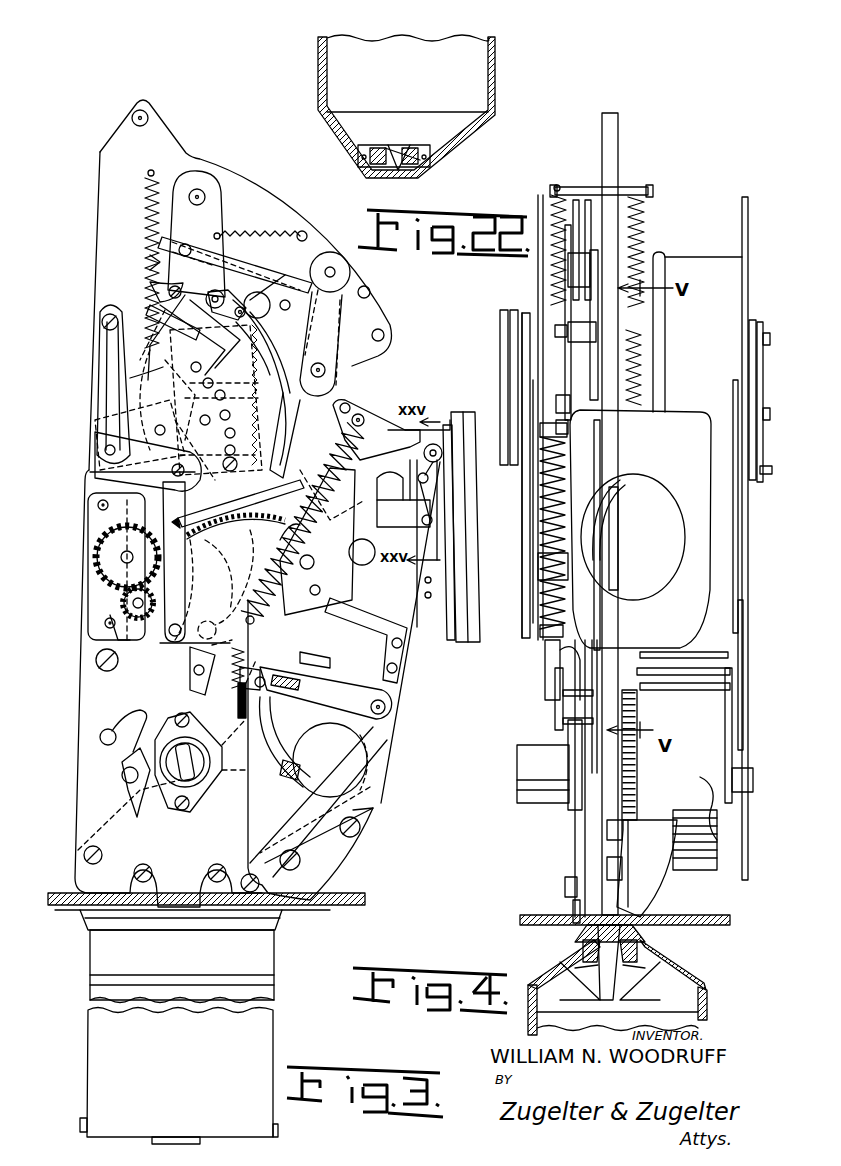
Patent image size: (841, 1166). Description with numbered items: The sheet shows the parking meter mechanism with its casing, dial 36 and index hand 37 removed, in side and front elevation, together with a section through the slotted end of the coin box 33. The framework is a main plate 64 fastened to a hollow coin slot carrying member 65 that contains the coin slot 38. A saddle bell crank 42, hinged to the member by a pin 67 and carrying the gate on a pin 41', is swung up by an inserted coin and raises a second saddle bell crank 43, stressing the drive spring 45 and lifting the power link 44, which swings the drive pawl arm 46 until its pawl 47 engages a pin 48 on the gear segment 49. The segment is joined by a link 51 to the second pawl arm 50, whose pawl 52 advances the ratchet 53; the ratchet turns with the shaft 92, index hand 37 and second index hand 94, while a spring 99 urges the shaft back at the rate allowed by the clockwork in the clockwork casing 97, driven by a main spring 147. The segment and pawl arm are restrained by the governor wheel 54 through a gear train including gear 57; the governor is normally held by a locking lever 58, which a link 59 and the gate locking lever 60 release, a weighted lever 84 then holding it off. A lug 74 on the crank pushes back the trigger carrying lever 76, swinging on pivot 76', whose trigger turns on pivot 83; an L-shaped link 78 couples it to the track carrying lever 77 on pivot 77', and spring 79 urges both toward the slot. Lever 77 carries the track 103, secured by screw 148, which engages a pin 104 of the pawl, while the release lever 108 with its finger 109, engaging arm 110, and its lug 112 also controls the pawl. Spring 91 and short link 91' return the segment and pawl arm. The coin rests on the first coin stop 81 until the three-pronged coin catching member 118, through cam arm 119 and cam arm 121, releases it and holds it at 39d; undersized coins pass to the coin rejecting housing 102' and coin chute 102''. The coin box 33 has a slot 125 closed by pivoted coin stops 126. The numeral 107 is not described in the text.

In FIG. 3, the coin box 33 is at (262, 1033).
In FIG. 22, the coin box 33 is at (480, 53).
In FIG. 4, the coin box 33 is at (698, 995).
In FIG. 4, the dial 36 is at (565, 658).
In FIG. 4, the index hand 37 is at (522, 615).
In FIG. 3, the coin slot 38 is at (472, 575).
In FIG. 4, the coin slot 38 is at (620, 500).
In FIG. 3, the coin position 39d is at (355, 757).
In FIG. 3, the pin 41' is at (406, 490).
In FIG. 3, the saddle bell crank 42 is at (395, 527).
In FIG. 3, the second saddle bell crank 43 is at (382, 415).
In FIG. 3, the power link 44 is at (352, 560).
In FIG. 3, the drive spring 45 is at (348, 445).
In FIG. 4, the drive spring 45 is at (540, 534).
In FIG. 3, the drive pawl arm 46 is at (230, 577).
In FIG. 3, the pawl 47 is at (215, 705).
In FIG. 3, the pin 48 is at (165, 650).
In FIG. 3, the gear segment 49 is at (152, 748).
In FIG. 4, the gear segment 49 is at (560, 678).
In FIG. 3, the second pawl arm 50 is at (173, 321).
In FIG. 4, the second pawl arm 50 is at (540, 375).
In FIG. 3, the link 51 is at (182, 585).
In FIG. 3, the pawl 52 is at (262, 316).
In FIG. 4, the pawl 52 is at (560, 308).
In FIG. 3, the ratchet 53 is at (290, 380).
In FIG. 4, the ratchet 53 is at (545, 350).
In FIG. 3, the governor wheel 54 is at (92, 556).
In FIG. 3, the gear 57 is at (128, 620).
In FIG. 3, the locking lever 58 is at (244, 456).
In FIG. 3, the link 59 is at (232, 502).
In FIG. 4, the gate locking lever 60 is at (628, 405).
In FIG. 3, the main plate 64 is at (106, 178).
In FIG. 3, the coin slot carrying member 65 is at (393, 733).
In FIG. 4, the coin slot carrying member 65 is at (637, 708).
In FIG. 3, the pin 67 is at (440, 465).
In FIG. 3, the lug 74 is at (473, 512).
In FIG. 3, the trigger carrying lever 76 is at (347, 344).
In FIG. 3, the pivot 76' is at (357, 272).
In FIG. 3, the track carrying lever 77 is at (213, 234).
In FIG. 3, the pivot 77' is at (220, 170).
In FIG. 3, the L-shaped link 78 is at (255, 272).
In FIG. 4, the L-shaped link 78 is at (565, 415).
In FIG. 3, the spring 79 is at (272, 224).
In FIG. 3, the first coin stop 81 is at (328, 690).
In FIG. 3, the pivot 83 is at (326, 576).
In FIG. 3, the weighted lever 84 is at (216, 400).
In FIG. 3, the spring 91 is at (135, 259).
In FIG. 4, the spring 91 is at (548, 232).
In FIG. 3, the short link 91' is at (102, 381).
In FIG. 3, the shaft 92 is at (95, 450).
In FIG. 4, the shaft 92 is at (758, 482).
In FIG. 4, the second index hand 94 is at (745, 605).
In FIG. 4, the clockwork casing 97 is at (690, 260).
In FIG. 4, the spring 99 is at (645, 225).
In FIG. 4, the coin rejecting housing 102' is at (640, 533).
In FIG. 4, the coin chute 102'' is at (676, 868).
In FIG. 3, the track 103 is at (270, 370).
In FIG. 4, the track 103 is at (563, 435).
In FIG. 3, the pin 104 is at (252, 300).
In FIG. 4, the pin 104 is at (575, 330).
In FIG. 3, the rod 107 is at (278, 495).
In FIG. 3, the release lever 108 is at (150, 360).
In FIG. 3, the finger 109 is at (219, 336).
In FIG. 4, the finger 109 is at (548, 400).
In FIG. 3, the arm 110 is at (190, 298).
In FIG. 3, the lug 112 is at (152, 300).
In FIG. 3, the three-pronged coin catching member 118 is at (386, 707).
In FIG. 4, the three-pronged coin catching member 118 is at (560, 702).
In FIG. 4, the cam arm 119 is at (558, 725).
In FIG. 4, the cam arm 121 is at (548, 625).
In FIG. 22, the slot 125 is at (398, 170).
In FIG. 22, the coin stops 126 is at (430, 148).
In FIG. 4, the coin stops 126 is at (650, 982).
In FIG. 4, the main spring 147 is at (717, 815).
In FIG. 3, the screw 148 is at (147, 262).